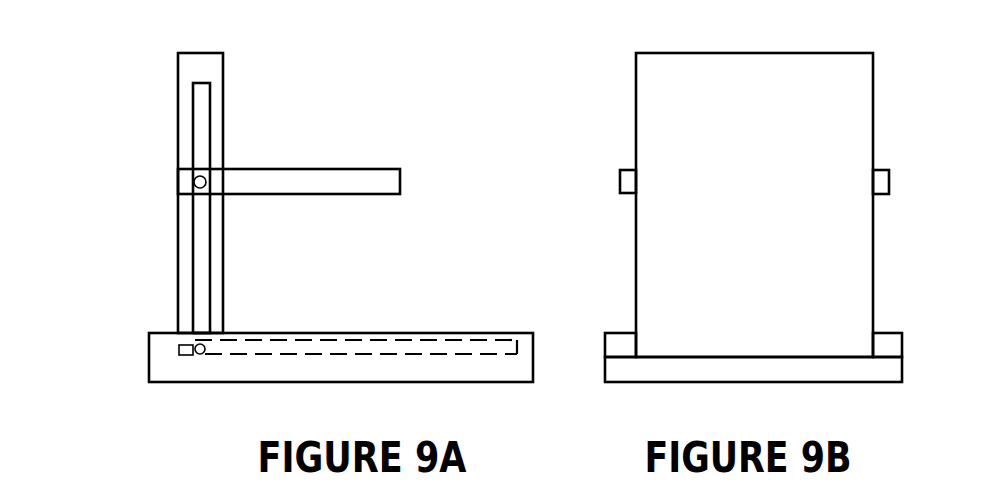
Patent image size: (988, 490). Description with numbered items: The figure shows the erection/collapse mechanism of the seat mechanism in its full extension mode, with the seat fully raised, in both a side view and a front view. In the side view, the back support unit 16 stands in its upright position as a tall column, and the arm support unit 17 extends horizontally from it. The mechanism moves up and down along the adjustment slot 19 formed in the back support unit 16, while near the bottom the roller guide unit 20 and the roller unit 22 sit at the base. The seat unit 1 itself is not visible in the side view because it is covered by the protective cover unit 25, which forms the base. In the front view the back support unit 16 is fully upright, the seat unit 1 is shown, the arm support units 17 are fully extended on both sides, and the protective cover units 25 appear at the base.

In FIG. 9B, the seat unit 1 is at (770, 367).
In FIG. 9A, the back support unit 16 is at (178, 145).
In FIG. 9B, the back support unit 16 is at (680, 193).
In FIG. 9A, the arm support unit 17 is at (332, 168).
In FIG. 9B, the arm support unit 17 is at (620, 170).
In FIG. 9A, the adjustment slot 19 is at (199, 287).
In FIG. 9A, the roller guide unit 20 is at (178, 353).
In FIG. 9A, the roller unit 22 is at (194, 347).
In FIG. 9A, the protective cover unit 25 is at (385, 332).
In FIG. 9B, the protective cover unit 25 is at (608, 338).